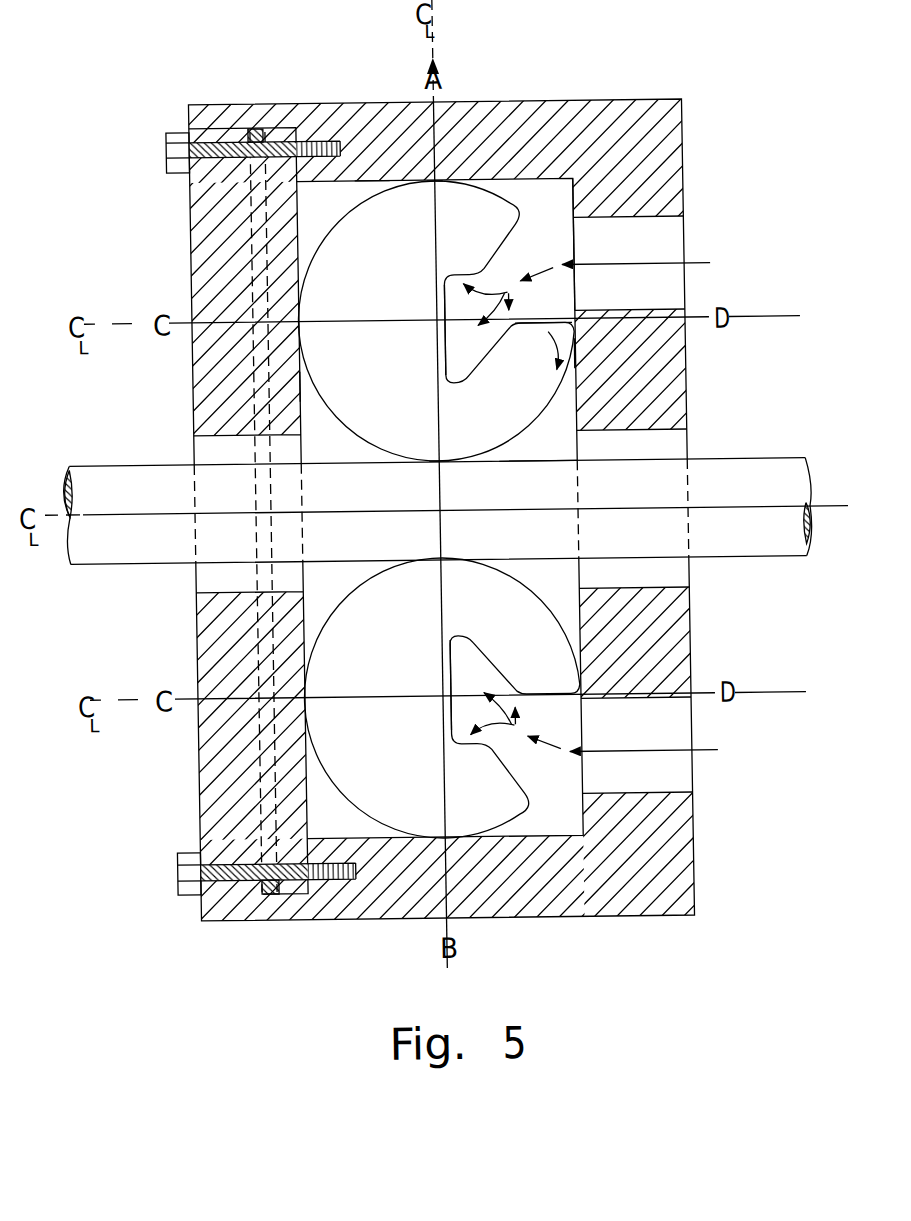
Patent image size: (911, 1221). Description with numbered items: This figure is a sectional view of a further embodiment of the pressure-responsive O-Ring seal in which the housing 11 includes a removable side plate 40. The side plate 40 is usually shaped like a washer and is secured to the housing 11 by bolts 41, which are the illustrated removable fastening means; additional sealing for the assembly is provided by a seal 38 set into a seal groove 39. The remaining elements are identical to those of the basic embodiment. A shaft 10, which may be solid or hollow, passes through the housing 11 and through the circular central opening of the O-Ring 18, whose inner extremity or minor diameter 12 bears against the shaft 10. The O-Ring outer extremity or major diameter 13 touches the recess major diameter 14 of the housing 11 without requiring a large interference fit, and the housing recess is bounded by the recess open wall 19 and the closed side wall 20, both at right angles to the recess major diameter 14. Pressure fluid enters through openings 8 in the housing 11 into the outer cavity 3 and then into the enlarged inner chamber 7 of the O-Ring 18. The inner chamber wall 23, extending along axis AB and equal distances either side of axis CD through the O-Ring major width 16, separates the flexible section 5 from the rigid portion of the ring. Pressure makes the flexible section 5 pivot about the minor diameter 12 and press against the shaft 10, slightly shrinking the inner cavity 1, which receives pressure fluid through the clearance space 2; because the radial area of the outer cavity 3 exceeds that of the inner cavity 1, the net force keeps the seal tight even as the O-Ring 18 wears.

The inner cavity 1 is at (548, 461).
The clearance space 2 is at (626, 460).
The outer cavity 3 is at (559, 254).
The flexible section 5 is at (540, 331).
The inner chamber 7 is at (460, 381).
The openings 8 is at (662, 259).
The shaft 10 is at (530, 542).
The housing 11 is at (662, 202).
The minor diameter 12 is at (440, 458).
The major diameter 13 is at (437, 182).
The recess major diameter 14 is at (377, 181).
The O-Ring major width 16 is at (304, 697).
The O-Ring 18 is at (385, 302).
The recess open wall 19 is at (575, 367).
The closed side wall 20 is at (304, 382).
The inner chamber wall 23 is at (448, 677).
The seal 38 is at (266, 920).
The seal groove 39 is at (277, 895).
The side plate 40 is at (229, 775).
The bolts 41 is at (171, 145).